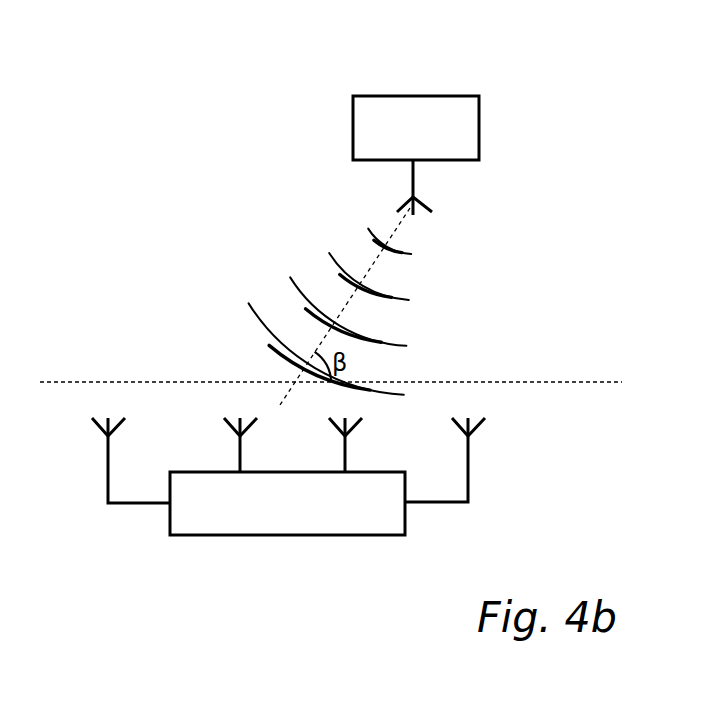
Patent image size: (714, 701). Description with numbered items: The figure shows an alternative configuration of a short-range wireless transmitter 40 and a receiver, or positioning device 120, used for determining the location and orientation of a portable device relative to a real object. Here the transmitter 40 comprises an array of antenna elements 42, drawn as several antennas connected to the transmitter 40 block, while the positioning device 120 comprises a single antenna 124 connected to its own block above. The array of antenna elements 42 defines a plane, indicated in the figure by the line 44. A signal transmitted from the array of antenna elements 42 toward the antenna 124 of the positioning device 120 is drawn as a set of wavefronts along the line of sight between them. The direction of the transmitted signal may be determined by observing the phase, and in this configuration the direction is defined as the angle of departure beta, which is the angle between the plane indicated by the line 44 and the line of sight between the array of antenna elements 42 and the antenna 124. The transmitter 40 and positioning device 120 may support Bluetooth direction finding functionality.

The positioning device 120 is at (413, 96).
The antenna 124 is at (425, 204).
The line indicating the plane of the antenna array 44 is at (518, 382).
The array of antenna elements 42 is at (107, 459).
The short-range wireless transmitter 40 is at (277, 535).